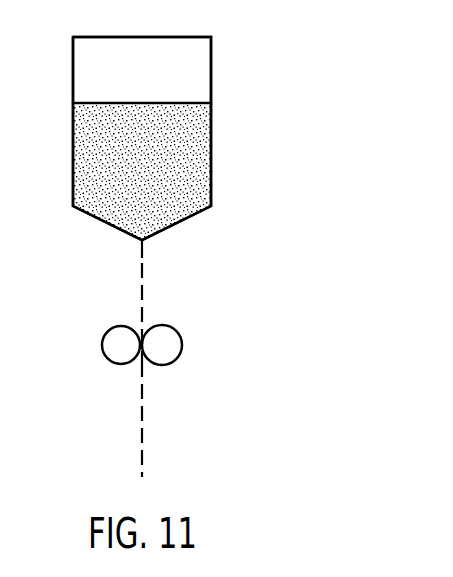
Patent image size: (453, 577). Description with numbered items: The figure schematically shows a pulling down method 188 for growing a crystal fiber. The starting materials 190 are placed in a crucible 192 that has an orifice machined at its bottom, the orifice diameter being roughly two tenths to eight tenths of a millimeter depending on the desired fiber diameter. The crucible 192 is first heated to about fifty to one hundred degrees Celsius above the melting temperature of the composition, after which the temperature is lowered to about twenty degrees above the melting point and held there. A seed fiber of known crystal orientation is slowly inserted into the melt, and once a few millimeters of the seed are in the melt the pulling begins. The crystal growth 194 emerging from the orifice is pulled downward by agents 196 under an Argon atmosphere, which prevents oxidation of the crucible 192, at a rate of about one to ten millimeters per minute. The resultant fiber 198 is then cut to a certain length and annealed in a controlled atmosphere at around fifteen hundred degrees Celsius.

The pulling down method 188 is at (285, 87).
The starting materials 190 is at (195, 162).
The crucible 192 is at (211, 73).
The crystal growth 194 is at (142, 292).
The agents 196 is at (122, 343).
The resultant fiber 198 is at (139, 423).